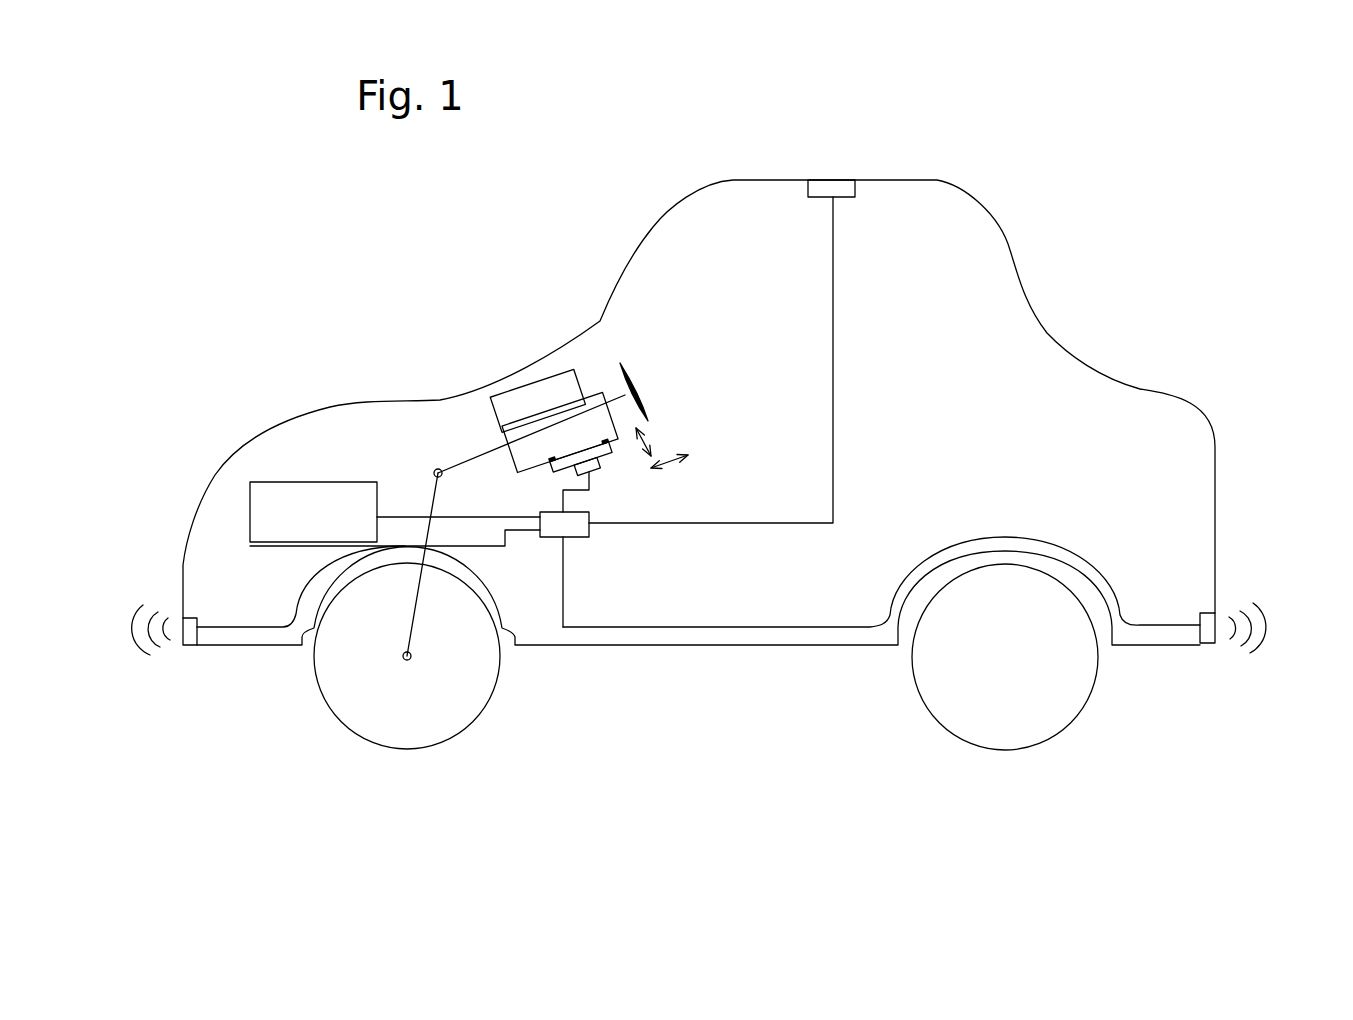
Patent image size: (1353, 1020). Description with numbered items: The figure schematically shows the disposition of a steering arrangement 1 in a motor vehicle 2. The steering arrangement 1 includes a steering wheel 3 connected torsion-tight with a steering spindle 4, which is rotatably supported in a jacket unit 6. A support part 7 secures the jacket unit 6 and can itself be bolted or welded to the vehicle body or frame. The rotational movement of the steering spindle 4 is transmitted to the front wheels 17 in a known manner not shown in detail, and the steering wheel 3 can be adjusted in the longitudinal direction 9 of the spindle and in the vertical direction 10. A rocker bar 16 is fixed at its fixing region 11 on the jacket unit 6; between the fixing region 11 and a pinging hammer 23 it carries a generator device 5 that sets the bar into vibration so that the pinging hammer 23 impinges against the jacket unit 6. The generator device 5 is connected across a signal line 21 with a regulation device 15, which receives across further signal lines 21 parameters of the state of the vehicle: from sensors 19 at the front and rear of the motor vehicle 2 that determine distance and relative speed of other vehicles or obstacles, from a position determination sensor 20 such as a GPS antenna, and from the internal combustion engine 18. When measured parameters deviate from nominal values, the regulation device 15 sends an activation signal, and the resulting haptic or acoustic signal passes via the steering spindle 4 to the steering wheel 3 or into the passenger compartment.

The steering arrangement 1 is at (617, 468).
The motor vehicle 2 is at (1018, 230).
The steering wheel 3 is at (630, 377).
The steering spindle 4 is at (615, 390).
The generator device 5 is at (583, 452).
The jacket unit 6 is at (541, 445).
The support part 7 is at (528, 403).
The longitudinal direction 9 is at (672, 463).
The vertical direction 10 is at (643, 440).
The fixing region 11 is at (537, 438).
The regulation device 15 is at (572, 528).
The rocker bar 16 is at (600, 453).
The front wheels 17 is at (353, 675).
The internal combustion engine 18 is at (270, 503).
The sensors 19 is at (192, 640).
The position determination sensor 20 is at (830, 188).
The signal line 21 is at (835, 290).
The pinging hammer 23 is at (617, 448).